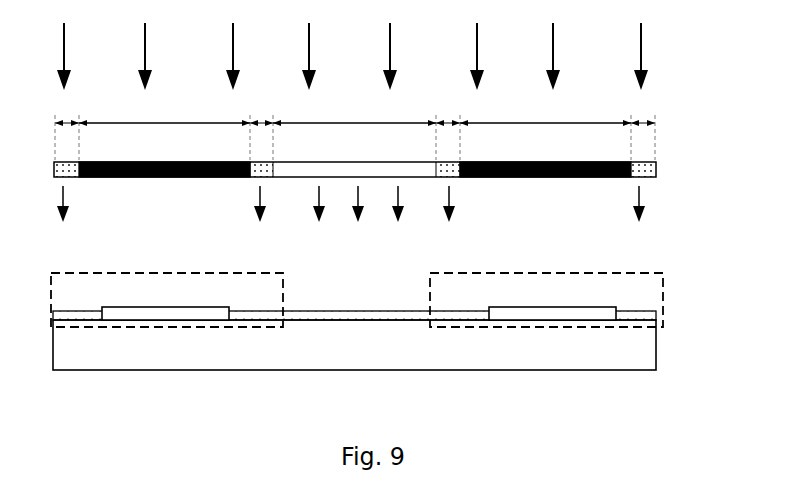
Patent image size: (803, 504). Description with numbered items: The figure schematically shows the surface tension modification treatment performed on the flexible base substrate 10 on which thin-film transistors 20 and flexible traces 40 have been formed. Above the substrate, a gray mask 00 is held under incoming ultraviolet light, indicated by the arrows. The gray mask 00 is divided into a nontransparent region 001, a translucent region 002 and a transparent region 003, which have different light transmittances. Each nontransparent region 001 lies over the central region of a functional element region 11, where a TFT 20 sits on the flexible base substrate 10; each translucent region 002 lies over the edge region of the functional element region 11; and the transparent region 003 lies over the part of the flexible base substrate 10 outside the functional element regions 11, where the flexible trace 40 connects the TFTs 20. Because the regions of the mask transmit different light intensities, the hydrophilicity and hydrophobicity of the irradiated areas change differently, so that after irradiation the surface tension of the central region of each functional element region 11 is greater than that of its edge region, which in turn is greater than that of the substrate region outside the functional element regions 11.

The gray mask 00 is at (657, 170).
The nontransparent region 001 is at (355, 114).
The translucent region 002 is at (355, 133).
The transparent region 003 is at (354, 114).
The flexible base substrate 10 is at (81, 355).
The functional element region 11 is at (103, 273).
The thin-film transistor 20 is at (152, 315).
The flexible trace 40 is at (317, 313).